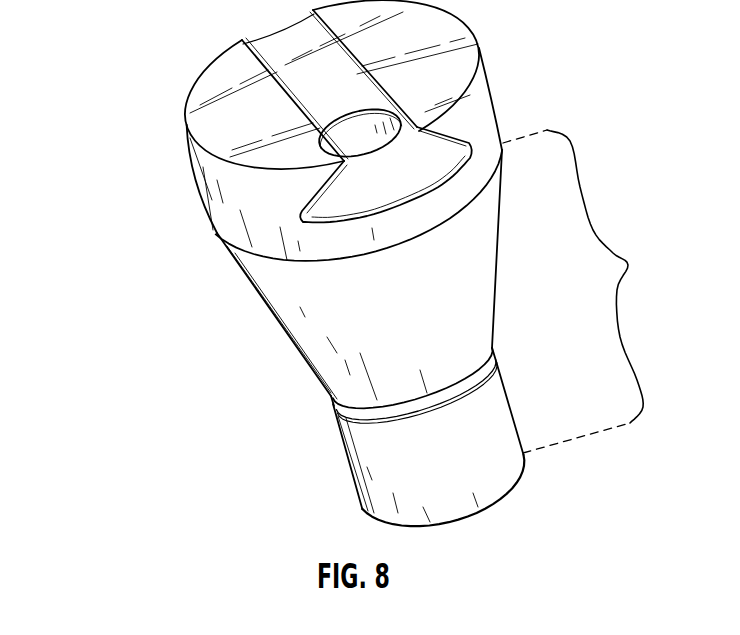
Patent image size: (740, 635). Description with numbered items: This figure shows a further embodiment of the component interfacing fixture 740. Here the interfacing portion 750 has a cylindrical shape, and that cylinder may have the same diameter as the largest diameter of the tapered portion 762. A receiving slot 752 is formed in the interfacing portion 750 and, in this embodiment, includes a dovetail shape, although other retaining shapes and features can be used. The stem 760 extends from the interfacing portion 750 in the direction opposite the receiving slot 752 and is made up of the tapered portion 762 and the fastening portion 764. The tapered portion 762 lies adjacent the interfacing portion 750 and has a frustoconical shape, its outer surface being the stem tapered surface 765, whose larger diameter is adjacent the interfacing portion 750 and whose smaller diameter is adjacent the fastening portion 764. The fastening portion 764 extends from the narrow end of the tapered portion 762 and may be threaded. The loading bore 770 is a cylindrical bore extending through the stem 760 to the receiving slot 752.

The component interfacing fixture 740 is at (132, 32).
The interfacing portion 750 is at (210, 168).
The receiving slot 752 is at (303, 83).
The loading bore 770 is at (367, 150).
The tapered portion 762 is at (273, 270).
The fastening portion 764 is at (355, 430).
The stem tapered surface 765 is at (506, 266).
The stem 760 is at (589, 291).